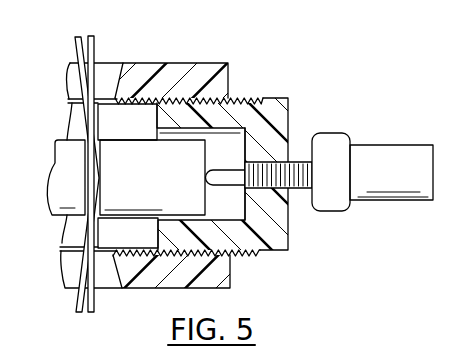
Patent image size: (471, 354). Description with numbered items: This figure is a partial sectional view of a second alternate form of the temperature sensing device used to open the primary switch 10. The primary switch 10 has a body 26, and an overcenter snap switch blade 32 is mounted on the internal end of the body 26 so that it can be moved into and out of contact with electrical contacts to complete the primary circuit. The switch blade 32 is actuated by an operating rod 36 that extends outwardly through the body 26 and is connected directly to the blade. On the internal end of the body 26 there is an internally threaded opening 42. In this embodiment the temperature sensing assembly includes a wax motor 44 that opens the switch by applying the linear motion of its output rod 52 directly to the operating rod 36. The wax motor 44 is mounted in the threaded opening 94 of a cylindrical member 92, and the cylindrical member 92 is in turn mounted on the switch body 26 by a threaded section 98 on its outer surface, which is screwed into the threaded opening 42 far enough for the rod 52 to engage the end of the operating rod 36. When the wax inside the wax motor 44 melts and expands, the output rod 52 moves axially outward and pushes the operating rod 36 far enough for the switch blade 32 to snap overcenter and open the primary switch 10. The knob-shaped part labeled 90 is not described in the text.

The primary switch 10 is at (143, 293).
The body 26 is at (183, 63).
The overcenter snap switch blade 32 is at (95, 49).
The operating rod 36 is at (58, 153).
The internally threaded opening 42 is at (150, 107).
The wax motor 44 is at (388, 145).
The output rod 52 is at (224, 169).
The knob 90 is at (299, 192).
The cylindrical member 92 is at (288, 97).
The threaded opening 94 is at (293, 162).
The threaded section 98 is at (248, 97).